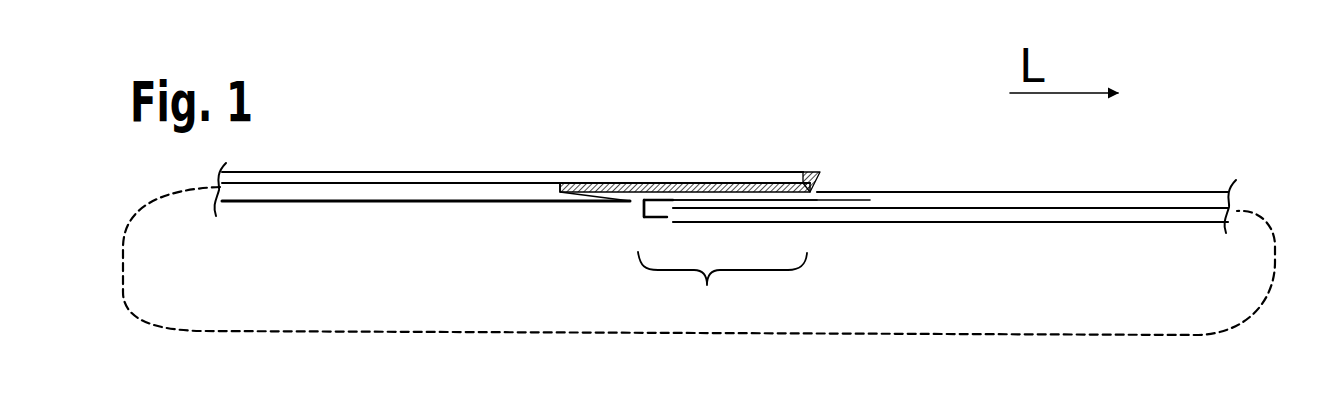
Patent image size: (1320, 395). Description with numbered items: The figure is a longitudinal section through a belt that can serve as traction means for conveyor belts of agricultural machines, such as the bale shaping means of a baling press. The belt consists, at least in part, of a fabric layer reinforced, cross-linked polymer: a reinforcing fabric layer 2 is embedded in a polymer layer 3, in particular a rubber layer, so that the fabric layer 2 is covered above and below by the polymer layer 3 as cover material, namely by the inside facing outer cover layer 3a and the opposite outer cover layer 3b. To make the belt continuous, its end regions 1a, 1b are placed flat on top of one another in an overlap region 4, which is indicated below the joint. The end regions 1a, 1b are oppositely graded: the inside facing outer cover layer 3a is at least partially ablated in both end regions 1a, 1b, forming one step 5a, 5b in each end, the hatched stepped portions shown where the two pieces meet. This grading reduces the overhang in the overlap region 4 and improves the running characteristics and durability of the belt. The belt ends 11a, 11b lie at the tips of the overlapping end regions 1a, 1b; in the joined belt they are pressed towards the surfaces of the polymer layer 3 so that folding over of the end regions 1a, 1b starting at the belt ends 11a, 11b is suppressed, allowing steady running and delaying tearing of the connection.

The end region 1a is at (801, 167).
The end region 1b is at (665, 226).
The reinforcing fabric layer 2 is at (290, 206).
The polymer layer 3 is at (380, 206).
The inside facing outer cover layer 3a is at (515, 185).
The outer cover layer 3b is at (412, 175).
The overlap region 4 is at (722, 295).
The step 5a is at (610, 186).
The step 5b is at (817, 200).
The belt end 11a is at (812, 183).
The belt end 11b is at (641, 210).